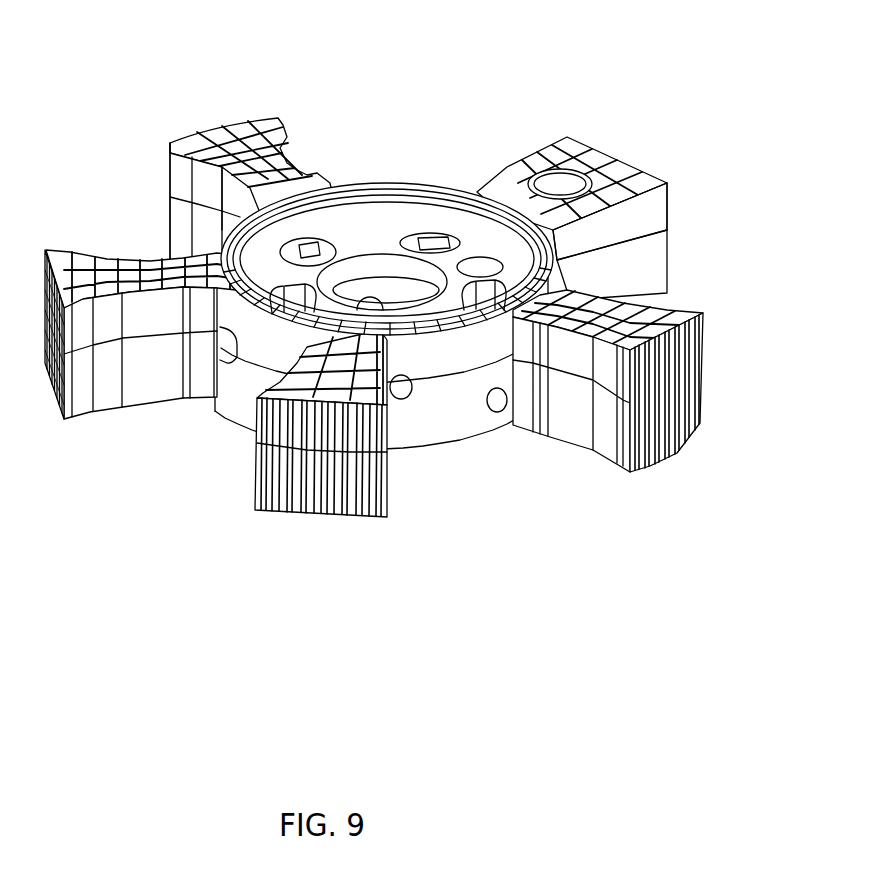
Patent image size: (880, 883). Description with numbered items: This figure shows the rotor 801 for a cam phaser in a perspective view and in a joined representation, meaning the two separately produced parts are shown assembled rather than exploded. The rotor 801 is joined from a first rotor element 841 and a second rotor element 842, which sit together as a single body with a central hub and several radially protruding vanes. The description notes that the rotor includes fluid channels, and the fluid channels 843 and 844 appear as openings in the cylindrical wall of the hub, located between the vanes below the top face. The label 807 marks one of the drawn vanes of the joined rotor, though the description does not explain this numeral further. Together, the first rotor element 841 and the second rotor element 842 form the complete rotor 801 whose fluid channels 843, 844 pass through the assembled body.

The rotor 801 is at (398, 307).
The pole piece 807 is at (372, 477).
The first rotor element 841 is at (655, 266).
The second rotor element 842 is at (655, 205).
The fluid channel 843 is at (502, 403).
The fluid channel 844 is at (404, 390).